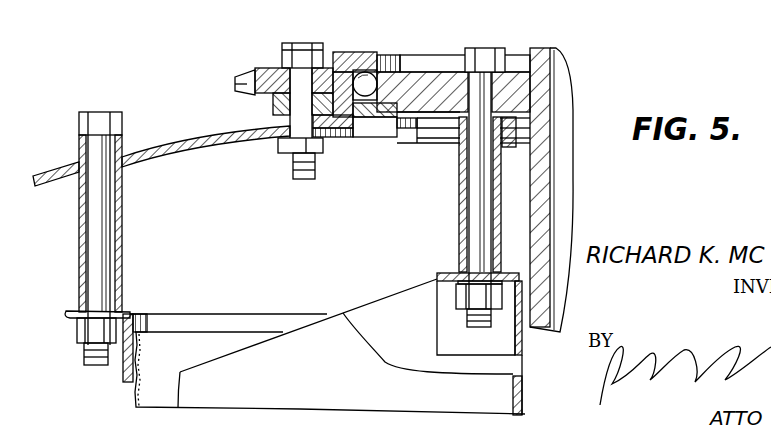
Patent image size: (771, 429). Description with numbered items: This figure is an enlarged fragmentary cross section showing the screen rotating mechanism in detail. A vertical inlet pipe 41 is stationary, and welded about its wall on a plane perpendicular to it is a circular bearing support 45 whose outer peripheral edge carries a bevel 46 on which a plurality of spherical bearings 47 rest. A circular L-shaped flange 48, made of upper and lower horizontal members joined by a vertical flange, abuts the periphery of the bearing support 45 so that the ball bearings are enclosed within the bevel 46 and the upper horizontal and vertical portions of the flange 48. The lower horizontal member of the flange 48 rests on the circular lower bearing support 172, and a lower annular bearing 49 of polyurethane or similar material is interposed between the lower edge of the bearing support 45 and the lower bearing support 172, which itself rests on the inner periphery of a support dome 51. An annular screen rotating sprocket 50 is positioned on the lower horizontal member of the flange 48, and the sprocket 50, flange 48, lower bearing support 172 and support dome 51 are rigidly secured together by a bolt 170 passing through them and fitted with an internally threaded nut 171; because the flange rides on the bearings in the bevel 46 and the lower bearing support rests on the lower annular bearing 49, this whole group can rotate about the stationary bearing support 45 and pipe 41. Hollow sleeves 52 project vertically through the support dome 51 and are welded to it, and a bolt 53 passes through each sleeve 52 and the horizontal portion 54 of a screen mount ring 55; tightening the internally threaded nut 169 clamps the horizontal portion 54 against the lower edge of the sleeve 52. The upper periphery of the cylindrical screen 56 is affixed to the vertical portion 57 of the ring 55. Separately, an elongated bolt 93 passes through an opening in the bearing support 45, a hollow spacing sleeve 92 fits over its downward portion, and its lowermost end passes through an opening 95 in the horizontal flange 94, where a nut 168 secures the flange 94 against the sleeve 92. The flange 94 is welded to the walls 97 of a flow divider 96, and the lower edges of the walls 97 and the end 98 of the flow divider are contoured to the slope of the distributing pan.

The vertical inlet pipe 41 is at (540, 88).
The circular bearing support 45 is at (428, 83).
The bevel 46 is at (362, 125).
The spherical bearings 47 is at (366, 75).
The circular L-shaped flange 48 is at (347, 45).
The lower annular bearing 49 is at (393, 122).
The annular screen rotating sprocket 50 is at (235, 81).
The support dome 51 is at (178, 142).
The hollow sleeve 52 is at (122, 197).
The bolt 53 is at (100, 125).
The horizontal portion of screen mount ring 54 is at (72, 312).
The screen mount ring 55 is at (141, 309).
The cylindrical screen 56 is at (133, 394).
The vertical portion of ring 57 is at (126, 366).
The hollow spacing sleeve 92 is at (462, 212).
The elongated bolt 93 is at (488, 62).
The horizontal flange 94 is at (437, 275).
The opening 95 is at (478, 273).
The flow divider 96 is at (287, 332).
The wall of flow divider 97 is at (330, 363).
The end of flow divider 98 is at (520, 397).
The nut 168 is at (460, 292).
The internally threaded nut 169 is at (78, 333).
The bolt 170 is at (288, 52).
The internally threaded nut 171 is at (285, 152).
The circular lower bearing support 172 is at (340, 137).